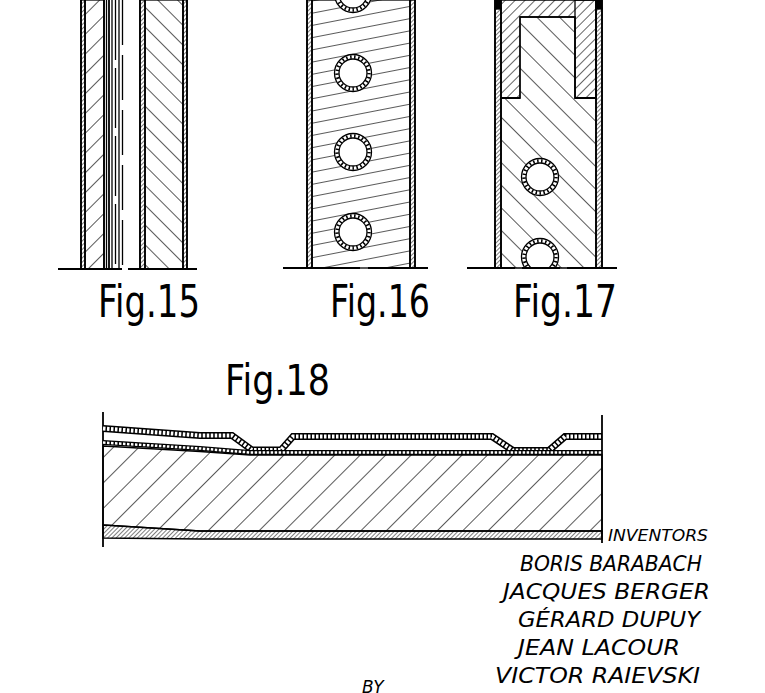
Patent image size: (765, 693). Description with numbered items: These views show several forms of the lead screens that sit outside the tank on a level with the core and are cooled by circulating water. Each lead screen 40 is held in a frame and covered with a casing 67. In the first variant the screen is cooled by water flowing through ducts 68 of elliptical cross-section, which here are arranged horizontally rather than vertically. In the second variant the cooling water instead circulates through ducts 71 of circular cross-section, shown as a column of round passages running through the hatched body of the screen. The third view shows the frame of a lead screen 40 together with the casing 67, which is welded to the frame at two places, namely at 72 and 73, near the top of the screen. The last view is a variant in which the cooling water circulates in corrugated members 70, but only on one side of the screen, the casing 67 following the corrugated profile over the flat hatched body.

In FIG. 17, the lead screen 40 is at (587, 135).
In FIG. 15, the casing 67 is at (82, 120).
In FIG. 16, the casing 67 is at (309, 146).
In FIG. 17, the casing 67 is at (499, 182).
In FIG. 18, the casing 67 is at (410, 452).
In FIG. 15, the ducts 68 is at (128, 228).
In FIG. 18, the corrugated members 70 is at (487, 442).
In FIG. 16, the ducts 71 is at (348, 232).
In FIG. 17, the ducts 71 is at (527, 197).
In FIG. 17, the weld 72 is at (494, 3).
In FIG. 17, the weld 73 is at (609, 49).